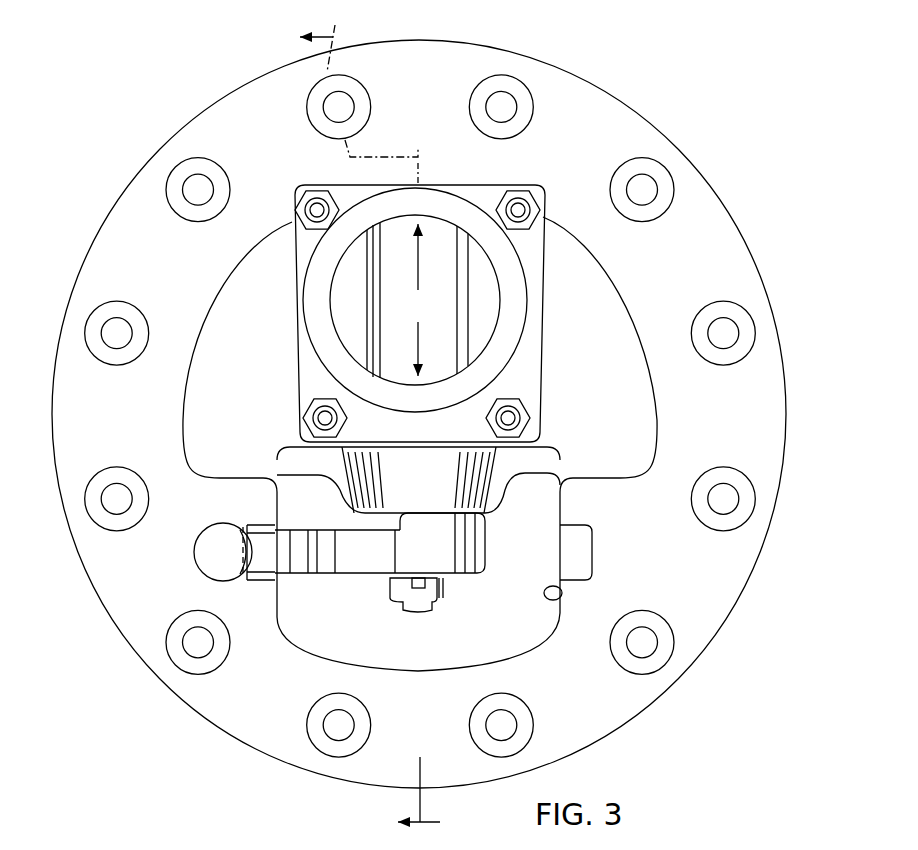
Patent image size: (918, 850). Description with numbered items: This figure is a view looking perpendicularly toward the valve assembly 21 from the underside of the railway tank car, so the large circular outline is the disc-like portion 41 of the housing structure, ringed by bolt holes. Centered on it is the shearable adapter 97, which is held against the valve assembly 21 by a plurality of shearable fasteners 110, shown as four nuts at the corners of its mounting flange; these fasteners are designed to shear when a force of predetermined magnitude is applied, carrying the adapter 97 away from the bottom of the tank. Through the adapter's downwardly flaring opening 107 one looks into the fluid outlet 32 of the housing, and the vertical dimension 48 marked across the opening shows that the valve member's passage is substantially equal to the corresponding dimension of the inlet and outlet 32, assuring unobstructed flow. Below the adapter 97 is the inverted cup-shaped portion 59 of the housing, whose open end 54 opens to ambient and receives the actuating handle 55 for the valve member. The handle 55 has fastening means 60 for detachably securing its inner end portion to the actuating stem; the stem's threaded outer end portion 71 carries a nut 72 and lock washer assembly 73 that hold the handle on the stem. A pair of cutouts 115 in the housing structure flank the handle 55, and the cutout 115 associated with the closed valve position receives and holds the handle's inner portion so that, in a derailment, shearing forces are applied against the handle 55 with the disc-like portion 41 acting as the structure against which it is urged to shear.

The valve assembly 21 is at (762, 108).
The disc-like portion 41 is at (758, 585).
The shearable adapter 97 is at (306, 373).
The shearable fasteners 110 is at (299, 195).
The flaring opening 107 is at (336, 330).
The fluid outlet 32 is at (462, 322).
The dimension 48 is at (418, 300).
The open end 54 is at (311, 655).
The fastening means 60 is at (480, 597).
The actuating handle 55 is at (300, 535).
The cutouts 115 is at (266, 583).
The inverted cup-shaped portion 59 is at (562, 593).
The lock washer assembly 73 is at (372, 585).
The threaded outer end portion 71 is at (420, 613).
The nut 72 is at (441, 592).